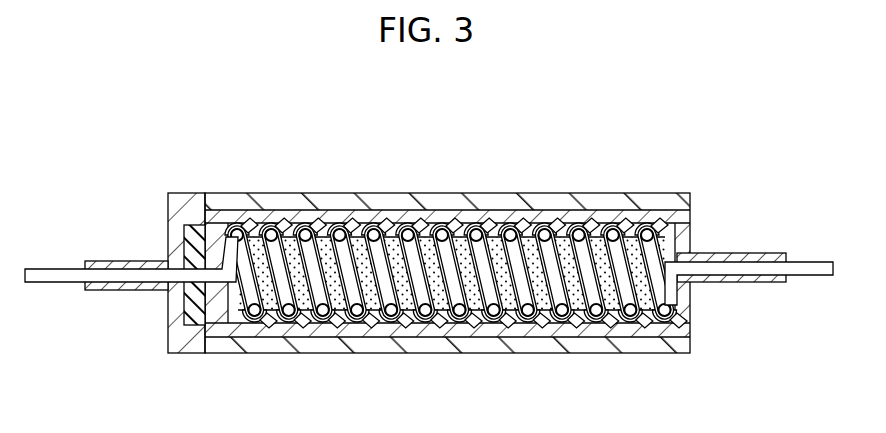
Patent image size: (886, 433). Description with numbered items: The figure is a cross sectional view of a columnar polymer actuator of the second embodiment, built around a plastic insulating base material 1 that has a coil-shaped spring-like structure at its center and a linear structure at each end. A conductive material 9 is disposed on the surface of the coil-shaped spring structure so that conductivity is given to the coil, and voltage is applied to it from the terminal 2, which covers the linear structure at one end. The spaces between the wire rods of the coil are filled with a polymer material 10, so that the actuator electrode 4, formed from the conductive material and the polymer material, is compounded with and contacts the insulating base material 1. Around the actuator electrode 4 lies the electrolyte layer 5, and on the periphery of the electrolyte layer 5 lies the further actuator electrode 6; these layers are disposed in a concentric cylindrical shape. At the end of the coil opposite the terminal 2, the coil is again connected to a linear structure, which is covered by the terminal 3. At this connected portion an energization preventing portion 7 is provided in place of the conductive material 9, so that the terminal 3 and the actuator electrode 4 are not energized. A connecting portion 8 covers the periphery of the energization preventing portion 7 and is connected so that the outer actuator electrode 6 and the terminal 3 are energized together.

The insulating base material 1 is at (802, 263).
The terminal 2 is at (753, 258).
The terminal 3 is at (105, 264).
The actuator electrode 4 is at (684, 331).
The electrolyte layer 5 is at (686, 228).
The actuator electrode 6 is at (537, 193).
The energization preventing portion 7 is at (194, 318).
The connecting portion 8 is at (182, 193).
The conductive material 9 is at (547, 325).
The polymer material 10 is at (583, 297).